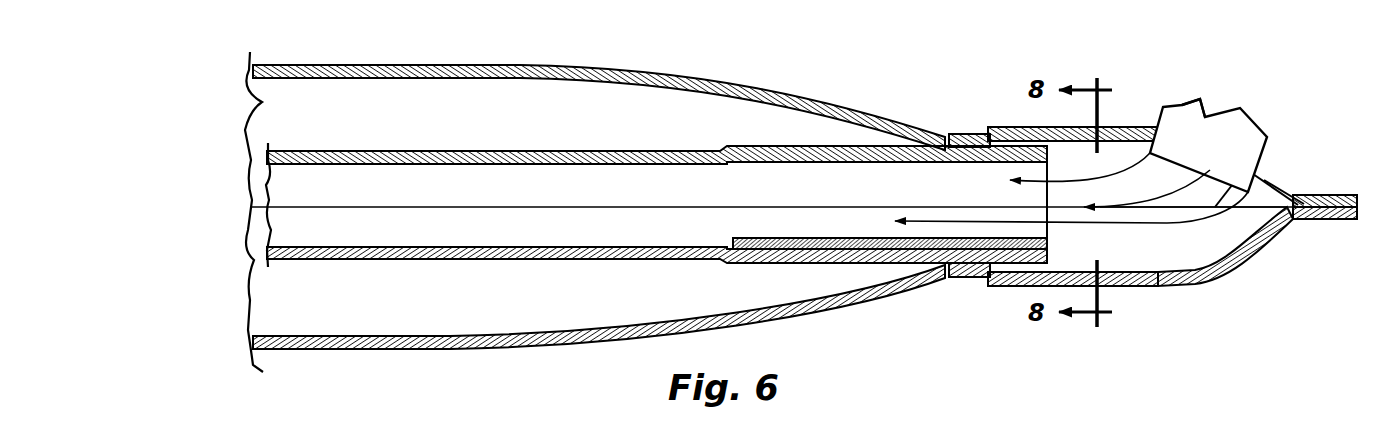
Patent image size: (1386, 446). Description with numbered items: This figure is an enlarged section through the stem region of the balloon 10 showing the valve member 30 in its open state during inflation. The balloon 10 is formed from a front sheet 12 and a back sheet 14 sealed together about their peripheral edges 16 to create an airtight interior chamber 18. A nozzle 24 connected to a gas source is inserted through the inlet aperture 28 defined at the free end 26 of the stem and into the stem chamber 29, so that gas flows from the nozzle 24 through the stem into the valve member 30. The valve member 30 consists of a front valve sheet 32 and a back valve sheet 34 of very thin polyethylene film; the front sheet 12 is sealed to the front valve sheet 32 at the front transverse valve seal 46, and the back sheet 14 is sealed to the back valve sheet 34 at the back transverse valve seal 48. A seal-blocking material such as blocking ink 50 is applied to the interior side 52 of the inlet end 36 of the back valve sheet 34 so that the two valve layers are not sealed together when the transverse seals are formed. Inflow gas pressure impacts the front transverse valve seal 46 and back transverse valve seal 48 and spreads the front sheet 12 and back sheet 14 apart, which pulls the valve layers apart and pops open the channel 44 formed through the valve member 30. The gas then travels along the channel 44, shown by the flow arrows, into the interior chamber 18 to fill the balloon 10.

The balloon 10 is at (310, 353).
The front sheet 12 is at (388, 65).
The back sheet 14 is at (460, 350).
The peripheral edges 16 is at (1320, 219).
The interior chamber 18 is at (617, 305).
The nozzle 24 is at (1240, 110).
The free end 26 is at (1250, 253).
The inlet aperture 28 is at (1205, 117).
The stem chamber 29 is at (1262, 197).
The valve member 30 is at (1055, 247).
The front valve sheet 32 is at (421, 150).
The back valve sheet 34 is at (505, 262).
The inlet end 36 is at (1055, 165).
The channel 44 is at (533, 180).
The front transverse valve seal 46 is at (957, 133).
The back transverse valve seal 48 is at (967, 270).
The blocking ink 50 is at (730, 243).
The interior side 52 is at (758, 238).